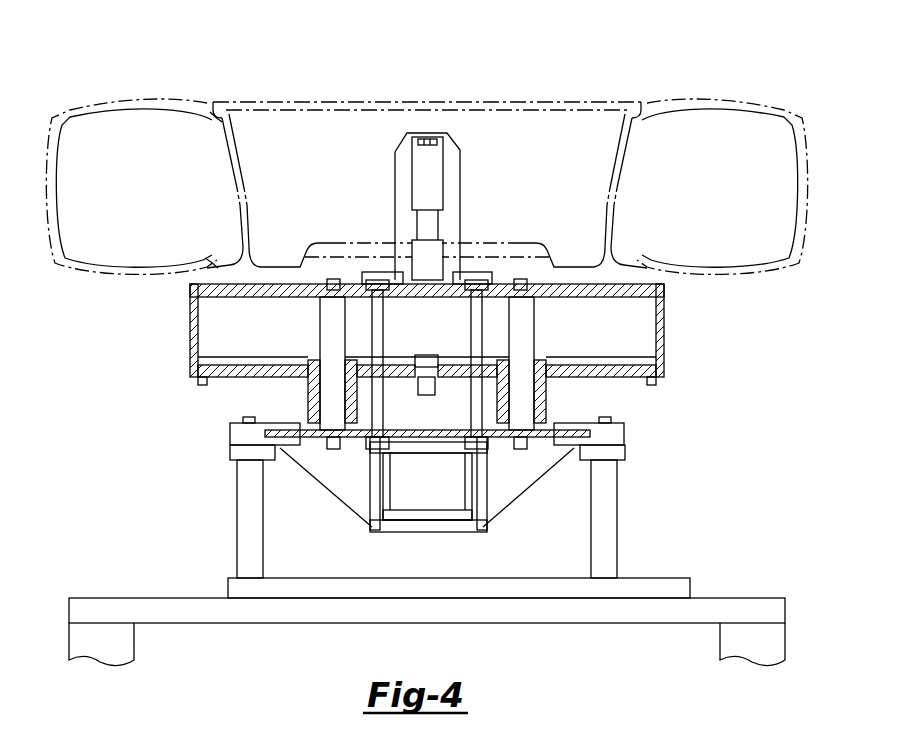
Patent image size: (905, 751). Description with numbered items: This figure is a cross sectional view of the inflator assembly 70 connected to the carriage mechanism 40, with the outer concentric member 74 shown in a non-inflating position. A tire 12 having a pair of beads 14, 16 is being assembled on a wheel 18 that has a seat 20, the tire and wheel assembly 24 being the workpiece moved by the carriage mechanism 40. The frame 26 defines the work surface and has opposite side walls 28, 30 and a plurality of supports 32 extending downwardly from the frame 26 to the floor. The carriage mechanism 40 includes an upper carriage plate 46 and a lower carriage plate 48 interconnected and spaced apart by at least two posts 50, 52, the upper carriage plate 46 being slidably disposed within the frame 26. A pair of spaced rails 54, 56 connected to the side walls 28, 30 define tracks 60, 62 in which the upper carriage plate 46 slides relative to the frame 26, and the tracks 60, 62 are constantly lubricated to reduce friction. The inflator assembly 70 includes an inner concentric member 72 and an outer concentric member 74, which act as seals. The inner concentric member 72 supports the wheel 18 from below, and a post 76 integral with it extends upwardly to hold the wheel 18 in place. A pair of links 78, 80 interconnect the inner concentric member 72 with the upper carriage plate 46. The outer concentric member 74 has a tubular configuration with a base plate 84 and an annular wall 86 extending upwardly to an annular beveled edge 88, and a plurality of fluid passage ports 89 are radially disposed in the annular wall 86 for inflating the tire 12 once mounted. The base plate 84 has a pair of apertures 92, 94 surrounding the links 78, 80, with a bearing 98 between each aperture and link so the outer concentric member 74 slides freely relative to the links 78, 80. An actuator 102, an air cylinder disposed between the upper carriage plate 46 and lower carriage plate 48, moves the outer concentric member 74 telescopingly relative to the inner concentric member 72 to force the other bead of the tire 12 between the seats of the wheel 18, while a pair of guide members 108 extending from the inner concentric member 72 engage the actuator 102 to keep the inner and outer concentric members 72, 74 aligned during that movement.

The tire 12 is at (104, 100).
The bead 14 is at (208, 122).
The bead 16 is at (210, 256).
The wheel 18 is at (290, 100).
The seat 20 is at (212, 100).
The tire and wheel assembly 24 is at (343, 92).
The frame 26 is at (144, 602).
The side wall 28 is at (242, 454).
The side wall 30 is at (623, 458).
The support 32 is at (80, 644).
The carriage mechanism 40 is at (820, 286).
The upper carriage plate 46 is at (542, 438).
The lower carriage plate 48 is at (433, 532).
The post 50 is at (375, 502).
The post 52 is at (497, 508).
The rail 54 is at (283, 425).
The rail 56 is at (232, 436).
The track 60 is at (555, 428).
The track 62 is at (270, 425).
The inflator assembly 70 is at (148, 374).
The inner concentric member 72 is at (557, 283).
The outer concentric member 74 is at (600, 364).
The post 76 is at (453, 160).
The link 78 is at (334, 332).
The link 80 is at (523, 323).
The base plate 84 is at (628, 374).
The annular wall 86 is at (665, 336).
The annular beveled edge 88 is at (190, 286).
The fluid passage port 89 is at (190, 316).
The aperture 92 is at (540, 358).
The aperture 94 is at (248, 364).
The bearing 98 is at (312, 436).
The actuator 102 is at (476, 486).
The guide member 108 is at (478, 330).